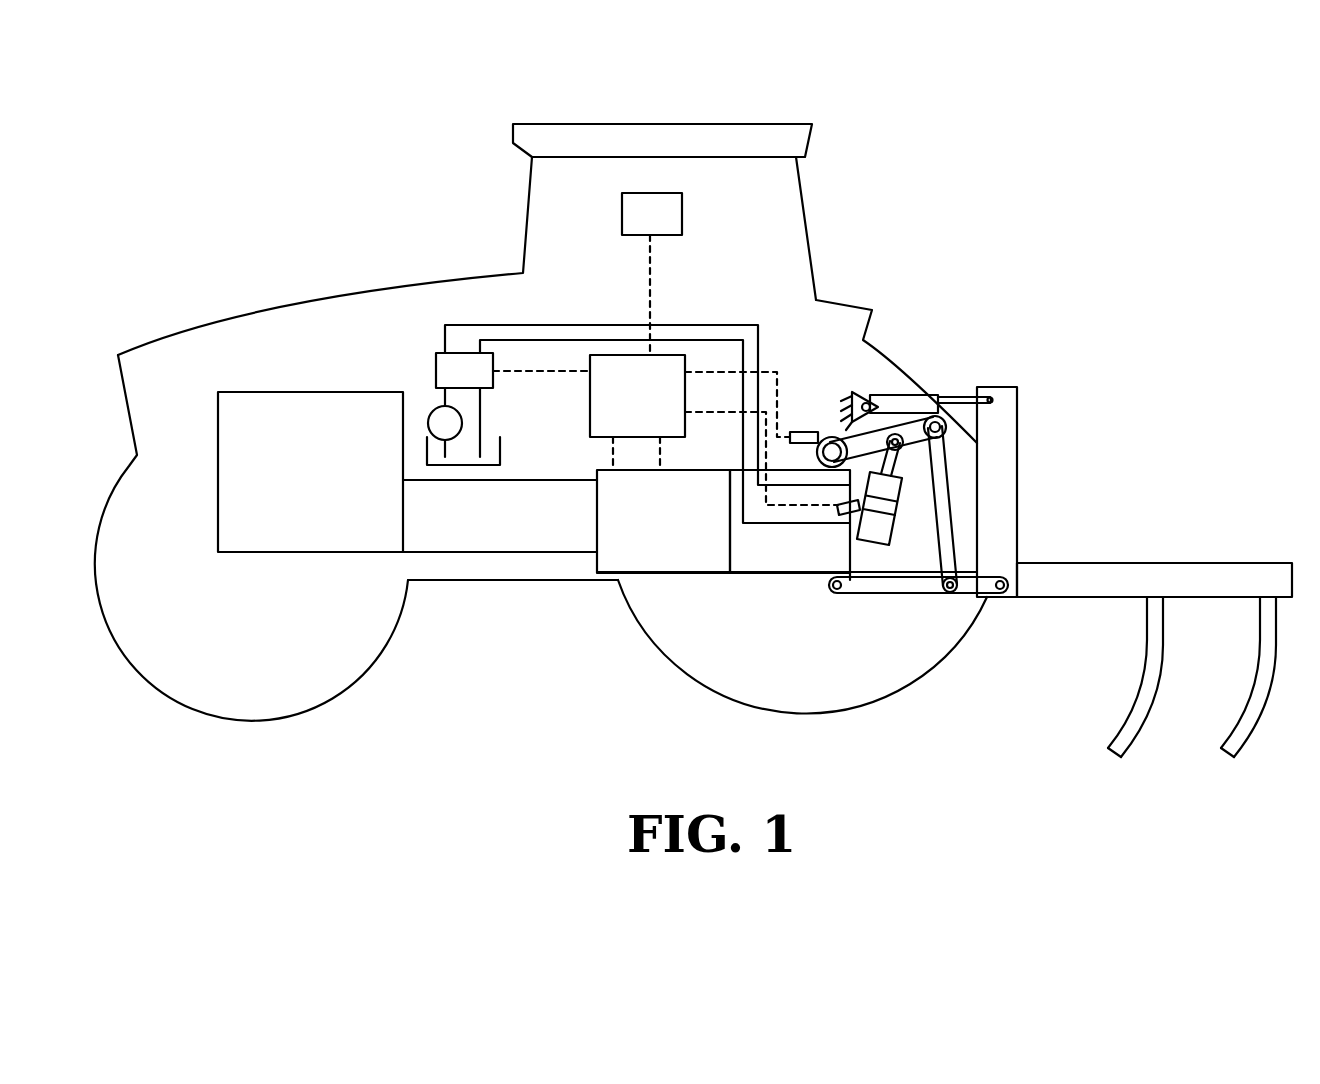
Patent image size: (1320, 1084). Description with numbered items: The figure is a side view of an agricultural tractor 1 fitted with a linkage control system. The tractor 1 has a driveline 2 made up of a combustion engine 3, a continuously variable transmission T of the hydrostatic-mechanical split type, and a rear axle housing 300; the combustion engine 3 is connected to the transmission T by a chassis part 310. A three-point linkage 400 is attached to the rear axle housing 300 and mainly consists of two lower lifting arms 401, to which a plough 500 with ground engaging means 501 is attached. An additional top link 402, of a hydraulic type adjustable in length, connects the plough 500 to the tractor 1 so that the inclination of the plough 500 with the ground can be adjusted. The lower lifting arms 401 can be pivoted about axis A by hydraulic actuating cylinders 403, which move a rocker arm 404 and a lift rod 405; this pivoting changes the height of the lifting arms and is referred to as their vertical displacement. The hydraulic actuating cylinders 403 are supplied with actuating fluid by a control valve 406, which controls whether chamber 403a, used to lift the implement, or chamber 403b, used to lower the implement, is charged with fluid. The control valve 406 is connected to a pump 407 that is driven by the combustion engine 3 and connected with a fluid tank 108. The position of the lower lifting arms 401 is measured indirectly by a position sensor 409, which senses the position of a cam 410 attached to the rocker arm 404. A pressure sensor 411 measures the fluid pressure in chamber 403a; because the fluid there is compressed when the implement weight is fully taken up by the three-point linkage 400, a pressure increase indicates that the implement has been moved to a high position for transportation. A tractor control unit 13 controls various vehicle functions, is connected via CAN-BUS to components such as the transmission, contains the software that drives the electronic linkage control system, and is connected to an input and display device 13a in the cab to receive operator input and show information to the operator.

The agricultural tractor 1 is at (461, 232).
The driveline 2 is at (500, 552).
The combustion engine 3 is at (310, 472).
The tractor control unit 13 is at (665, 430).
The input and display device 13a is at (652, 274).
The fluid tank 108 is at (547, 447).
The rear axle housing 300 is at (647, 452).
The chassis part 310 is at (450, 518).
The three-point linkage 400 is at (975, 365).
The lower lifting arms 401 is at (896, 588).
The top link 402 is at (907, 407).
The hydraulic actuating cylinders 403 is at (878, 494).
The chamber 403a is at (890, 527).
The chamber 403b is at (888, 488).
The rocker arm 404 is at (838, 427).
The lift rod 405 is at (953, 537).
The control valve 406 is at (438, 367).
The pump 407 is at (436, 418).
The position sensor 409 is at (797, 430).
The cam 410 is at (818, 428).
The pressure sensor 411 is at (835, 508).
The plough 500 is at (1086, 572).
The ground engaging means 501 is at (1116, 750).
The axis A is at (836, 594).
The continuously variable transmission T is at (663, 521).